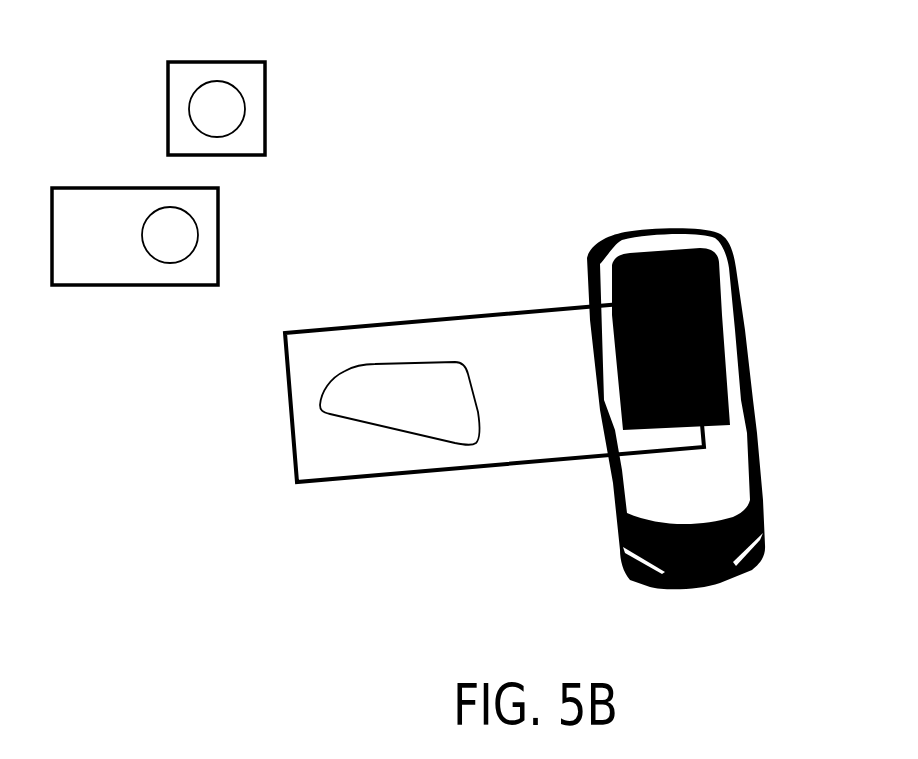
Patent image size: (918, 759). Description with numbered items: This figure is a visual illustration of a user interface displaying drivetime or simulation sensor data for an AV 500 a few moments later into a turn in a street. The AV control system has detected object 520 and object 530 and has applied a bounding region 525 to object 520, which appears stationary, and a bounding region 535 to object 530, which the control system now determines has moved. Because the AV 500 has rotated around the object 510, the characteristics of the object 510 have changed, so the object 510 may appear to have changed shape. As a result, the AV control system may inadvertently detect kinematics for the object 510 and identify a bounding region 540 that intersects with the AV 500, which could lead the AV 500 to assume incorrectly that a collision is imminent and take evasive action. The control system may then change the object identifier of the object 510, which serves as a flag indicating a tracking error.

The AV 500 is at (588, 258).
The object 510 is at (470, 376).
The object 520 is at (245, 113).
The bounding region 525 is at (245, 108).
The object 530 is at (198, 233).
The bounding region 535 is at (164, 235).
The bounding region 540 is at (466, 390).